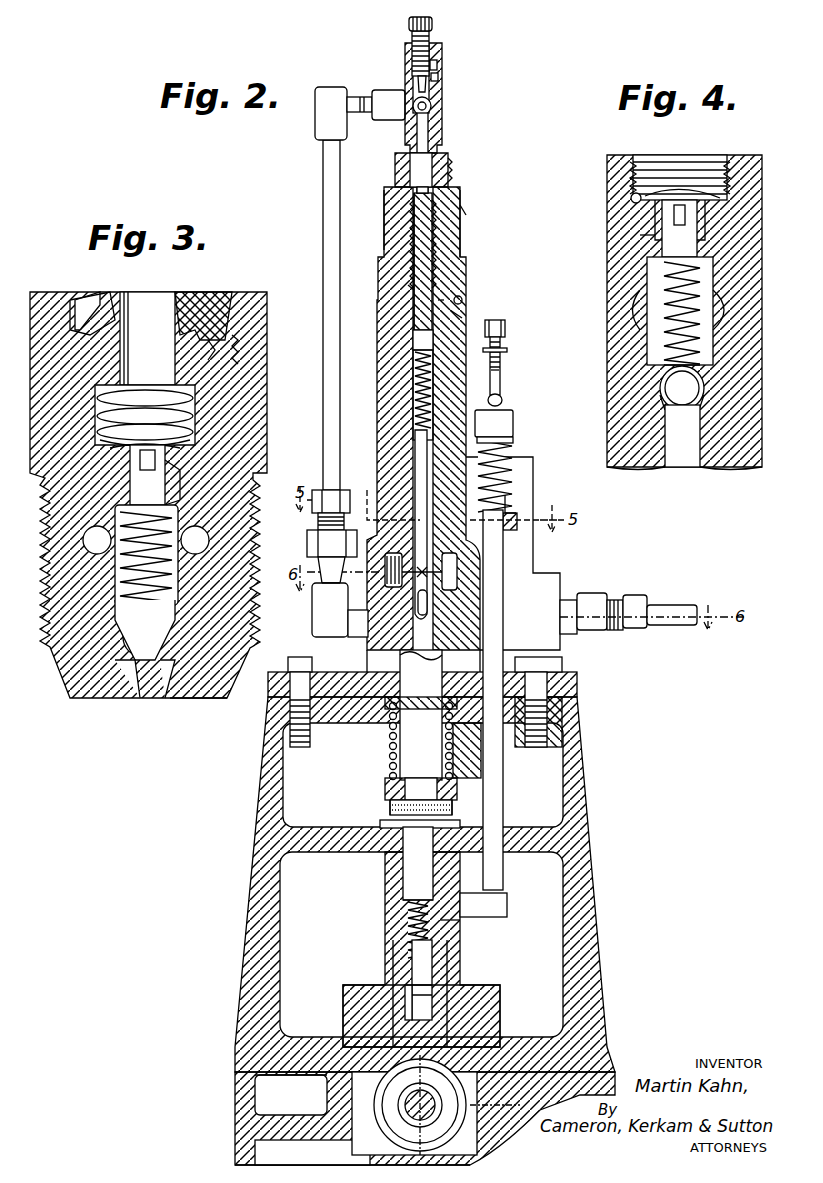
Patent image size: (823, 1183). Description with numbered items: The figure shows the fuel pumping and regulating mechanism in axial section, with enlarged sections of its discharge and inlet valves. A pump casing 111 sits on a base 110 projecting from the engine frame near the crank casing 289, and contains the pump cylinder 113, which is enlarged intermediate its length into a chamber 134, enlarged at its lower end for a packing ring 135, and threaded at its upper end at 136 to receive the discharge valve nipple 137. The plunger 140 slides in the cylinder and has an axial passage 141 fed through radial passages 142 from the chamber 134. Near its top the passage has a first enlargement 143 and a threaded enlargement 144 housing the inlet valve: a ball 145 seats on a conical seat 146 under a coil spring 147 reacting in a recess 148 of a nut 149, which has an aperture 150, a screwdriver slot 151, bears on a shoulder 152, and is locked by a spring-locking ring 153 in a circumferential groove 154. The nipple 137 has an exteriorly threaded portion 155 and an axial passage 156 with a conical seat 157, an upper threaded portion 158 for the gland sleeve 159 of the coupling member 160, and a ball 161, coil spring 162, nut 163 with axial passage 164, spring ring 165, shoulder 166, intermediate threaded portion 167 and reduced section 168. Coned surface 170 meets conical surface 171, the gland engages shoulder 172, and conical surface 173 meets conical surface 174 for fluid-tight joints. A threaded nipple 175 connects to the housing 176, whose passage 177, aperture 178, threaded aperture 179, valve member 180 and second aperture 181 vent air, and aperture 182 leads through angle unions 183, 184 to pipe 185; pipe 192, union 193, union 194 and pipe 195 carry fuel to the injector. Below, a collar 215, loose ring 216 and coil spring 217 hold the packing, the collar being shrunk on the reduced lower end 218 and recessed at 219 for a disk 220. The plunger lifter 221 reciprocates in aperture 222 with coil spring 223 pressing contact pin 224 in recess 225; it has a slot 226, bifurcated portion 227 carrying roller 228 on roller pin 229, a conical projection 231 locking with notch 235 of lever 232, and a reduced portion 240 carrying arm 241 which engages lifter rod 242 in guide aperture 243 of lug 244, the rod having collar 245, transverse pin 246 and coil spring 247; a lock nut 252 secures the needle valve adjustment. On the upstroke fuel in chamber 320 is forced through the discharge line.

In FIG. 2, the base 110 is at (590, 924).
In FIG. 2, the pump casing 111 is at (395, 440).
In FIG. 2, the pump cylinder 113 is at (499, 385).
In FIG. 2, the chamber 134 is at (453, 563).
In FIG. 2, the packing ring 135 is at (560, 684).
In FIG. 2, the threaded aperture 136 is at (452, 278).
In FIG. 2, the discharge valve nipple 137 is at (460, 228).
In FIG. 3, the discharge valve nipple 137 is at (245, 350).
In FIG. 2, the plunger 140 is at (414, 470).
In FIG. 4, the plunger 140 is at (740, 430).
In FIG. 2, the axial passage 141 is at (505, 440).
In FIG. 4, the axial passage 141 is at (690, 460).
In FIG. 2, the radial passages 142 is at (458, 582).
In FIG. 2, the first enlargement 143 is at (505, 364).
In FIG. 4, the first enlargement 143 is at (702, 342).
In FIG. 2, the threaded enlargement 144 is at (502, 352).
In FIG. 4, the threaded enlargement 144 is at (640, 244).
In FIG. 2, the ball 145 is at (412, 410).
In FIG. 4, the ball 145 is at (690, 378).
In FIG. 4, the conical seat 146 is at (704, 400).
In FIG. 4, the coil spring 147 is at (700, 328).
In FIG. 4, the recess 148 is at (713, 272).
In FIG. 4, the nut 149 is at (700, 248).
In FIG. 4, the aperture 150 is at (695, 222).
In FIG. 4, the slot 151 is at (730, 192).
In FIG. 4, the shoulder 152 is at (715, 318).
In FIG. 4, the spring-locking ring 153 is at (690, 190).
In FIG. 4, the circumferential groove 154 is at (630, 198).
In FIG. 2, the exteriorly threaded portion 155 is at (440, 262).
In FIG. 2, the axial passage 156 is at (452, 212).
In FIG. 3, the axial passage 156 is at (185, 398).
In FIG. 2, the conical seat 157 is at (408, 330).
In FIG. 3, the conical seat 157 is at (190, 660).
In FIG. 2, the upper threaded portion 158 is at (450, 182).
In FIG. 3, the upper threaded portion 158 is at (240, 300).
In FIG. 2, the gland sleeve 159 is at (446, 165).
In FIG. 3, the gland sleeve 159 is at (215, 298).
In FIG. 2, the coupling member 160 is at (392, 188).
In FIG. 3, the coupling member 160 is at (105, 298).
In FIG. 2, the ball 161 is at (406, 288).
In FIG. 3, the ball 161 is at (140, 650).
In FIG. 3, the coil spring 162 is at (110, 645).
In FIG. 3, the nut 163 is at (160, 492).
In FIG. 3, the axial passage 164 is at (170, 445).
In FIG. 3, the spring ring 165 is at (180, 430).
In FIG. 2, the shoulder 166 is at (335, 545).
In FIG. 3, the shoulder 166 is at (200, 540).
In FIG. 3, the intermediate threaded portion 167 is at (175, 492).
In FIG. 2, the reduced-diameter section 168 is at (330, 592).
In FIG. 3, the reduced-diameter section 168 is at (180, 598).
In FIG. 2, the coned surface 170 is at (404, 220).
In FIG. 3, the coned surface 170 is at (125, 335).
In FIG. 2, the conical surface 171 is at (405, 236).
In FIG. 3, the conical surface 171 is at (128, 365).
In FIG. 3, the shoulder 172 is at (215, 325).
In FIG. 2, the conical surface 173 is at (462, 296).
In FIG. 3, the conical surface 173 is at (225, 698).
In FIG. 2, the conical surface 174 is at (455, 318).
In FIG. 2, the threaded nipple 175 is at (435, 148).
In FIG. 2, the housing 176 is at (443, 100).
In FIG. 2, the passage 177 is at (427, 130).
In FIG. 2, the aperture 178 is at (439, 83).
In FIG. 2, the threaded aperture 179 is at (433, 44).
In FIG. 2, the valve member 180 is at (415, 36).
In FIG. 2, the second aperture 181 is at (438, 66).
In FIG. 2, the aperture 182 is at (415, 90).
In FIG. 2, the angle union 183 is at (385, 110).
In FIG. 2, the angle union 184 is at (325, 118).
In FIG. 2, the pipe 185 is at (325, 195).
In FIG. 2, the pipe 192 is at (355, 640).
In FIG. 2, the union 193 is at (325, 540).
In FIG. 2, the union 194 is at (590, 596).
In FIG. 2, the pipe 195 is at (665, 606).
In FIG. 2, the collar 215 is at (390, 786).
In FIG. 2, the loose ring 216 is at (545, 712).
In FIG. 2, the coil spring 217 is at (388, 735).
In FIG. 2, the reduced lower end 218 is at (425, 786).
In FIG. 2, the recess 219 is at (452, 805).
In FIG. 2, the disk 220 is at (388, 805).
In FIG. 2, the plunger lifter 221 is at (408, 905).
In FIG. 2, the aperture 222 is at (402, 862).
In FIG. 2, the coil spring 223 is at (460, 872).
In FIG. 2, the contact pin 224 is at (420, 832).
In FIG. 2, the recess 225 is at (408, 912).
In FIG. 2, the slot 226 is at (447, 948).
In FIG. 2, the bifurcated portion 227 is at (498, 1000).
In FIG. 2, the roller 228 is at (468, 1098).
In FIG. 2, the roller pin 229 is at (405, 1108).
In FIG. 2, the conical projection 231 is at (412, 948).
In FIG. 2, the lever 232 is at (432, 970).
In FIG. 2, the notch 235 is at (405, 965).
In FIG. 2, the reduced portion 240 is at (447, 925).
In FIG. 2, the arm 241 is at (508, 905).
In FIG. 2, the lifter rod 242 is at (520, 748).
In FIG. 2, the guide aperture 243 is at (518, 518).
In FIG. 2, the lug 244 is at (512, 505).
In FIG. 2, the collar 245 is at (513, 422).
In FIG. 2, the transverse pin 246 is at (502, 402).
In FIG. 2, the coil spring 247 is at (512, 448).
In FIG. 2, the lock nut 252 is at (506, 330).
In FIG. 2, the crank casing 289 is at (240, 1125).
In FIG. 2, the chamber 320 is at (413, 352).